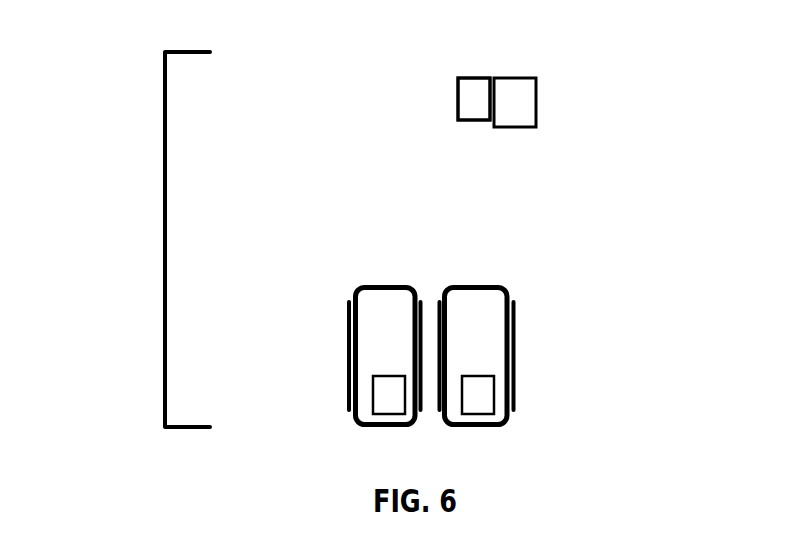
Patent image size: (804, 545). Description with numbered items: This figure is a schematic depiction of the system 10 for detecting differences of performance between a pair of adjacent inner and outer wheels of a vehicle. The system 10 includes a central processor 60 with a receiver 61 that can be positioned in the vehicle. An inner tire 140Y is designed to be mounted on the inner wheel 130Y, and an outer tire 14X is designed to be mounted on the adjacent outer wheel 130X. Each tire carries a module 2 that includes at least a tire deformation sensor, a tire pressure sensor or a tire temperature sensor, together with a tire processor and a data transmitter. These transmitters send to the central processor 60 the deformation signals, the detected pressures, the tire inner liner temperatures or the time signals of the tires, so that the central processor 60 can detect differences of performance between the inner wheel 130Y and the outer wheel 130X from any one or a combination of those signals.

The system 10 is at (150, 218).
The central processor 60 is at (553, 77).
The receiver 61 is at (438, 90).
The inner tire 140Y is at (385, 282).
The memory module X 14X is at (477, 282).
The inner wheel 130Y is at (345, 355).
The outer wheel 130X is at (518, 355).
The module 2 is at (395, 405).